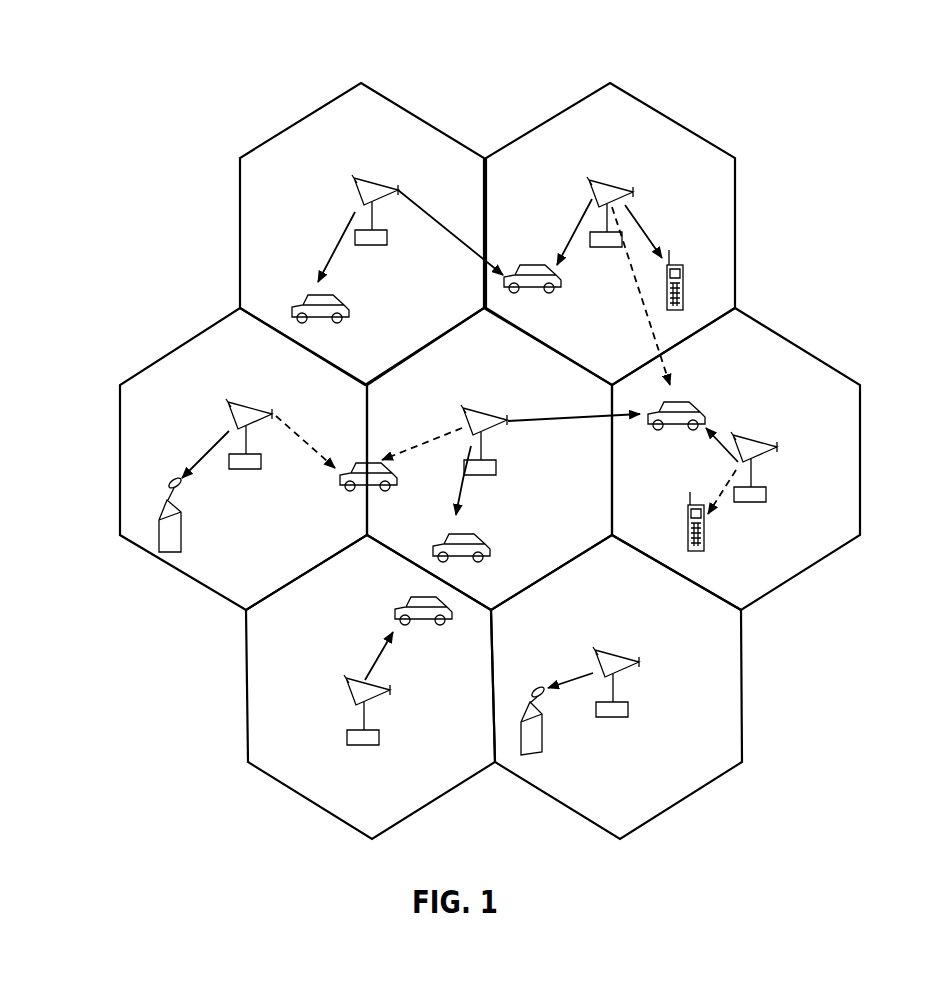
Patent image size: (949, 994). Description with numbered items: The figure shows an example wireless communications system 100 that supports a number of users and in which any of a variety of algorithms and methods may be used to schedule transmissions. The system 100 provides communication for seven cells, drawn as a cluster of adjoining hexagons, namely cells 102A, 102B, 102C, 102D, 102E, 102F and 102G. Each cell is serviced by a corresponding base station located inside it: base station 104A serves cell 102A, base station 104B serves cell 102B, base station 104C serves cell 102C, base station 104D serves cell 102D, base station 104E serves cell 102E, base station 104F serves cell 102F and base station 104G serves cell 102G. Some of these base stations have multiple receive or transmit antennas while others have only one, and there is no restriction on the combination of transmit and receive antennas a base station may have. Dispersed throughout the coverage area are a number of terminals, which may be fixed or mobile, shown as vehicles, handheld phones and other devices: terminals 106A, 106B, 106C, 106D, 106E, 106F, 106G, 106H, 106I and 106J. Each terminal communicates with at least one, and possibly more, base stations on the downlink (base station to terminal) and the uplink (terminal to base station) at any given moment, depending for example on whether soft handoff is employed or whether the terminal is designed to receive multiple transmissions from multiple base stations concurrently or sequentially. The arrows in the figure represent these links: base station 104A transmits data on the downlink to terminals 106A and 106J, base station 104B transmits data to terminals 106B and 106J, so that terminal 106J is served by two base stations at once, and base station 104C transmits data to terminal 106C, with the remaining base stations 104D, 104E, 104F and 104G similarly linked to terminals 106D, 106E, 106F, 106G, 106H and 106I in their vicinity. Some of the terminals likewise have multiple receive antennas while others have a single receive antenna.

The communications system 100 is at (837, 50).
The cell 102A is at (318, 112).
The cell 102B is at (668, 113).
The cell 102C is at (174, 351).
The cell 102D is at (520, 352).
The cell 102E is at (866, 452).
The cell 102F is at (247, 692).
The cell 102G is at (741, 660).
The base station 104A is at (367, 184).
The base station 104B is at (596, 182).
The base station 104C is at (236, 405).
The base station 104D is at (471, 412).
The base station 104E is at (741, 444).
The base station 104F is at (347, 675).
The base station 104G is at (602, 652).
The terminal 106A is at (314, 297).
The terminal 106B is at (670, 262).
The terminal 106C is at (170, 482).
The terminal 106D is at (458, 532).
The terminal 106E is at (681, 400).
The terminal 106F is at (417, 594).
The terminal 106G is at (535, 689).
The terminal 106H is at (362, 462).
The terminal 106I is at (688, 504).
The terminal 106J is at (539, 263).